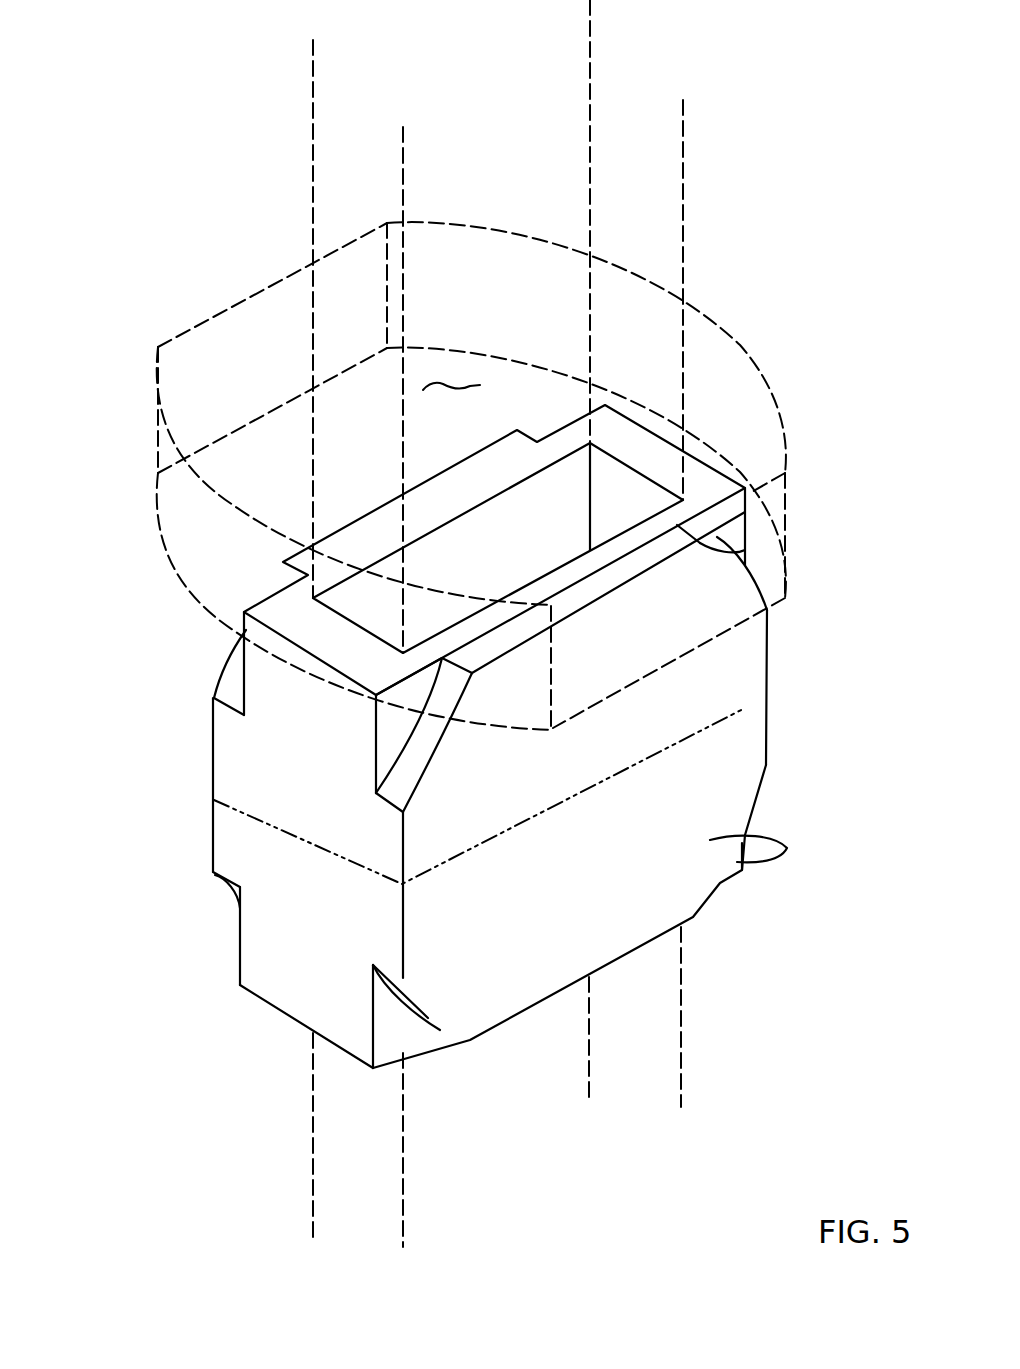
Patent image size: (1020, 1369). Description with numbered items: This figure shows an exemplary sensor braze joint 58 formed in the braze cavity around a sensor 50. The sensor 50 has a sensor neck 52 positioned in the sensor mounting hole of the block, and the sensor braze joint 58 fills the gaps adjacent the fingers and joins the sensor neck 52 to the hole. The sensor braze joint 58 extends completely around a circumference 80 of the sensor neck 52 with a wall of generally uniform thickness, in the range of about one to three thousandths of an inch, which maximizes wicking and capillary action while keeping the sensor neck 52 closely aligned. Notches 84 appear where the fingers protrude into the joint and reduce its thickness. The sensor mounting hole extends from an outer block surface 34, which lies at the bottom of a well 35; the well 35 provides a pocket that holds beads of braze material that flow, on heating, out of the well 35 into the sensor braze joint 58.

The outer block surface 34 is at (452, 373).
The well 35 is at (262, 452).
The sensor 50 is at (311, 142).
The sensor neck 52 is at (495, 556).
The sensor braze joint 58 is at (94, 573).
The circumference 80 is at (730, 718).
The notches 84 is at (747, 558).